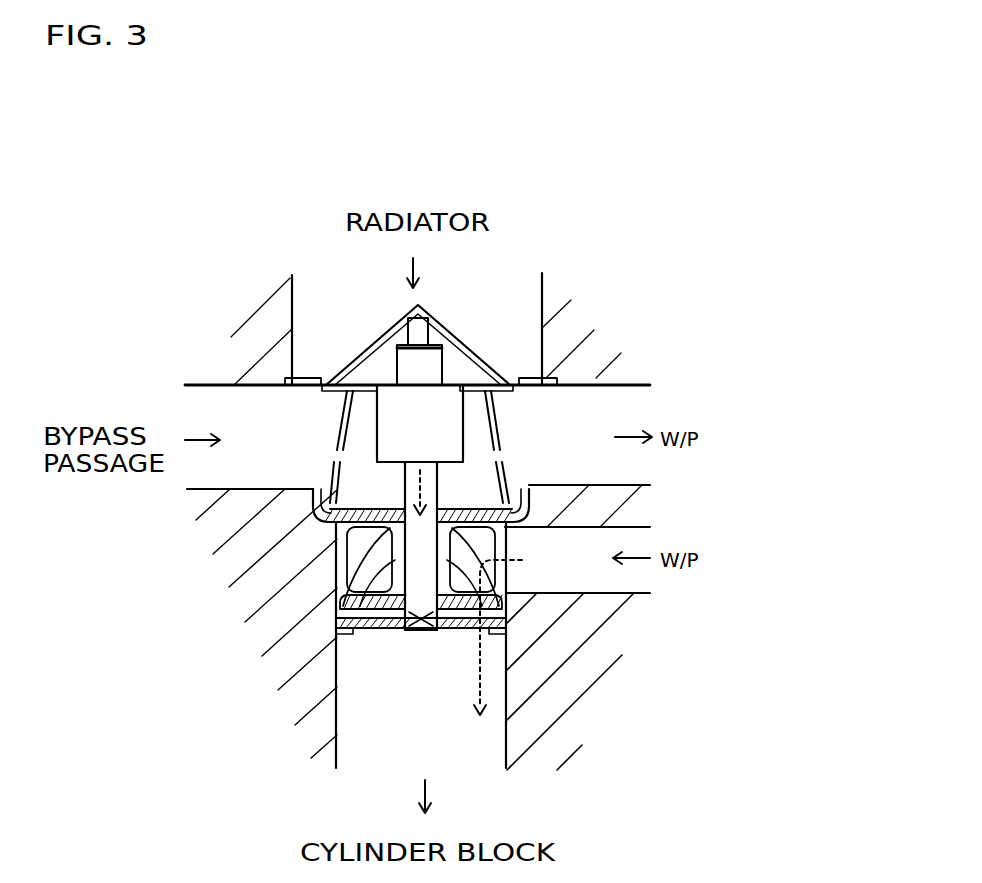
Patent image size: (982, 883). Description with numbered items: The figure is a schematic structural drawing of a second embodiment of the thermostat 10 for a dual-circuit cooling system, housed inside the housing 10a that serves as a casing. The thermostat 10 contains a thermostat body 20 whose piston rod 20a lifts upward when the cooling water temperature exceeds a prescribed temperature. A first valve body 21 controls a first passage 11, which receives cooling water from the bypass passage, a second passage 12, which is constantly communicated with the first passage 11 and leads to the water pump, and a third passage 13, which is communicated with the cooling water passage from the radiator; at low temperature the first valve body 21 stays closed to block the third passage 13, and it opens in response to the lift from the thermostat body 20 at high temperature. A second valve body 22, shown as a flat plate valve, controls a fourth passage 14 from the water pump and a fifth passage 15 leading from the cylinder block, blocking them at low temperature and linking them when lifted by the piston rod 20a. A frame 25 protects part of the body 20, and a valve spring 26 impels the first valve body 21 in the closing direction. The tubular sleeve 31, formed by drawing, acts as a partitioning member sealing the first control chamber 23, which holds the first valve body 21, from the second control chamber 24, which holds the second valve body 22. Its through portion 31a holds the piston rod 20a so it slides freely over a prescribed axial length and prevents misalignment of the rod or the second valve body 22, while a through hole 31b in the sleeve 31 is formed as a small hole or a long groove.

The thermostat 10 is at (772, 291).
The first passage 11 is at (198, 392).
The second passage 12 is at (601, 390).
The third passage 13 is at (542, 273).
The fourth passage 14 is at (607, 527).
The fifth passage 15 is at (507, 727).
The housing 10a is at (275, 643).
The thermostat body 20 is at (447, 423).
The piston rod 20a is at (337, 516).
The first valve body 21 is at (483, 380).
The second valve body 22 is at (372, 634).
The first control chamber 23 is at (492, 506).
The second control chamber 24 is at (472, 696).
The frame 25 is at (372, 350).
The valve spring 26 is at (332, 463).
The tubular sleeve 31 is at (336, 540).
The through portion 31a is at (335, 717).
The through hole 31b is at (488, 598).